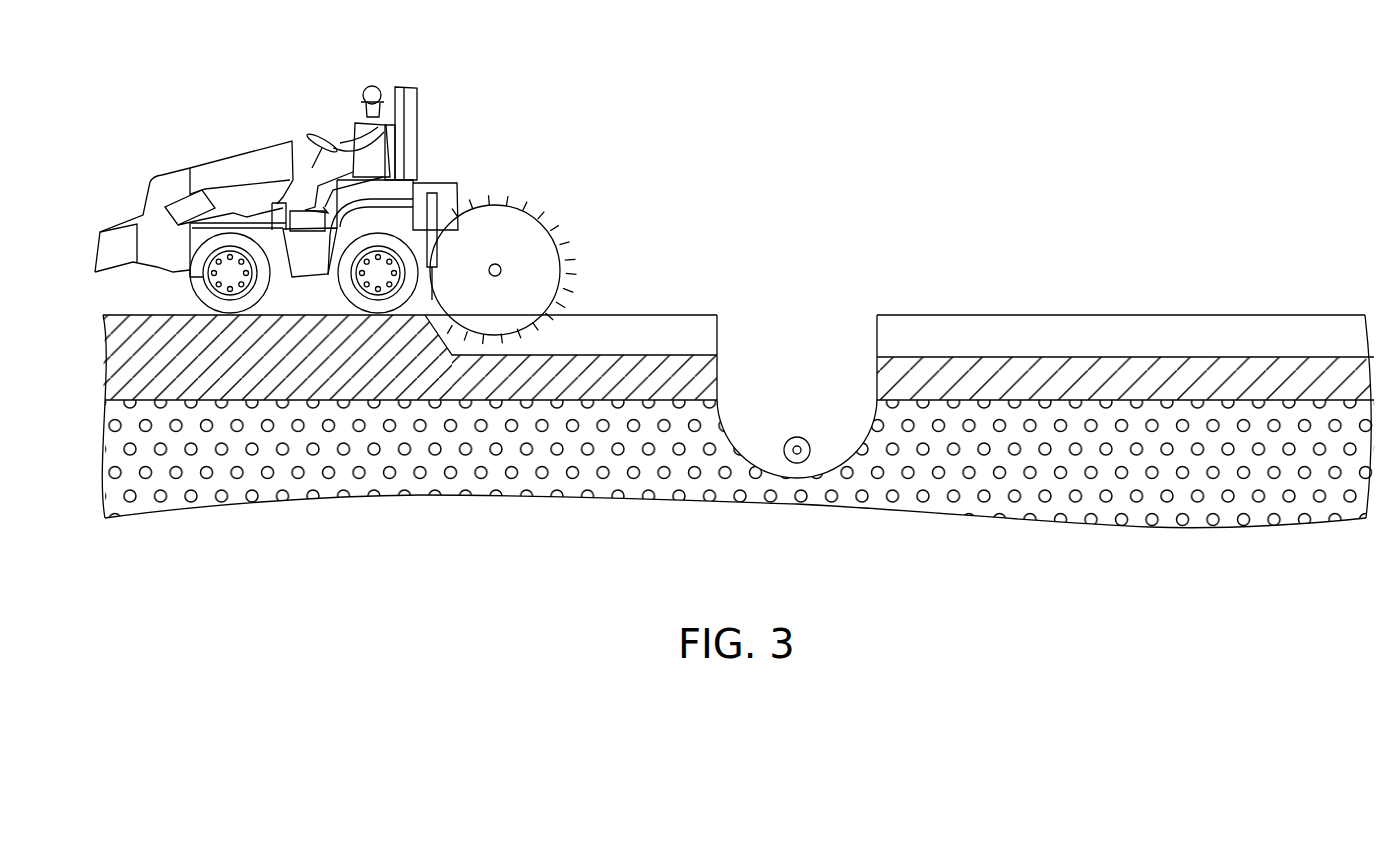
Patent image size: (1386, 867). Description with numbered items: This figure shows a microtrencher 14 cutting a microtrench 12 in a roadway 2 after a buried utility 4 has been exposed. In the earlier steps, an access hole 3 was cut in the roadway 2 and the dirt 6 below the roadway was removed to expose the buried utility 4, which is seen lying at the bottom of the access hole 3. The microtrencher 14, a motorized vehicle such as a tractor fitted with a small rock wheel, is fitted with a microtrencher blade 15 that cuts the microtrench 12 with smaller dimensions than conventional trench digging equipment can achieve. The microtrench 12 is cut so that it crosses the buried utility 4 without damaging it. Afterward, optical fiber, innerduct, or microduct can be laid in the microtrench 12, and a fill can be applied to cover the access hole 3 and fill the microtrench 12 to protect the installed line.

The roadway 2 is at (290, 386).
The access hole 3 is at (798, 316).
The buried utility 4 is at (797, 463).
The dirt 6 is at (1080, 518).
The microtrench 12 is at (621, 325).
The microtrencher 14 is at (418, 116).
The microtrencher blade 15 is at (508, 200).